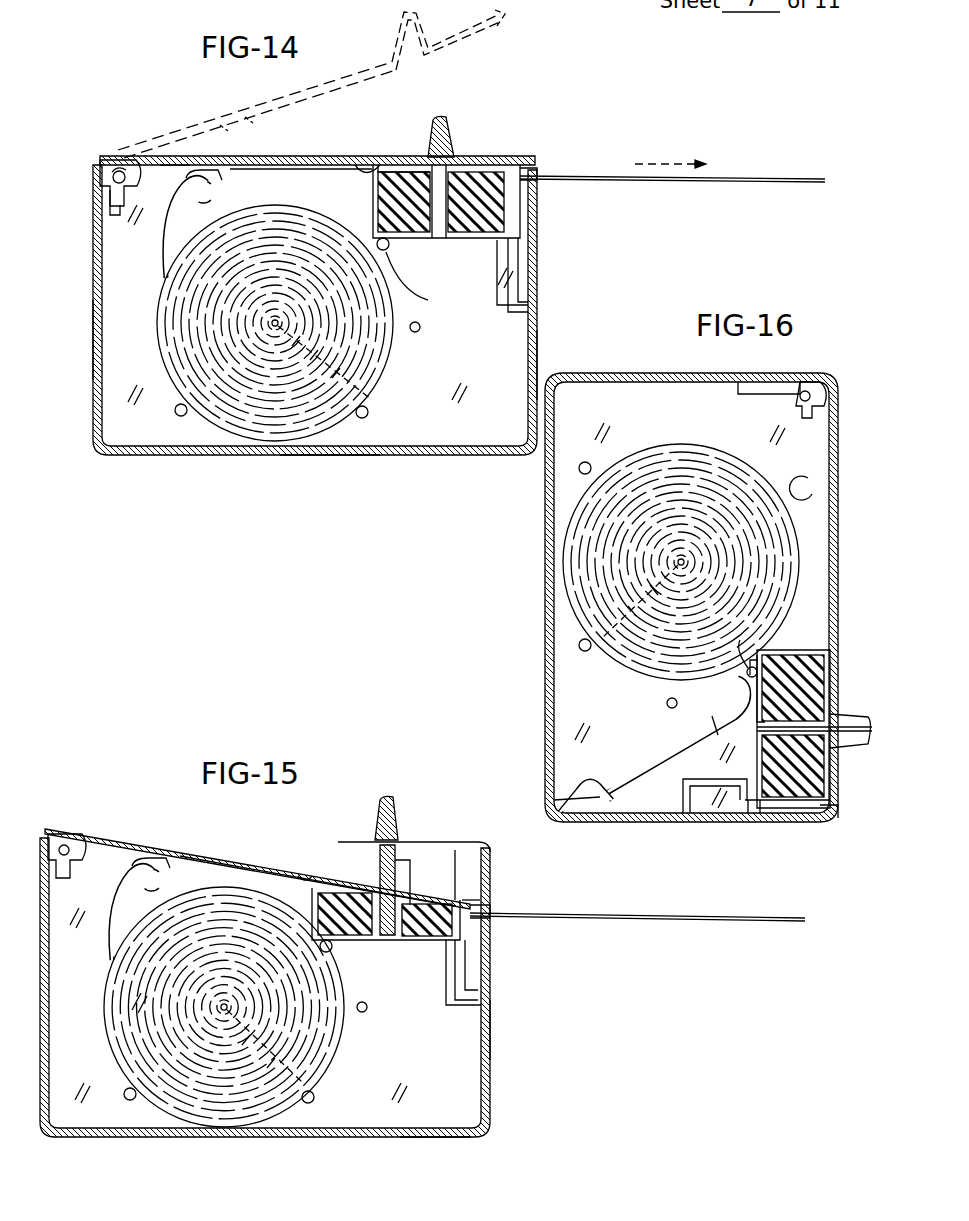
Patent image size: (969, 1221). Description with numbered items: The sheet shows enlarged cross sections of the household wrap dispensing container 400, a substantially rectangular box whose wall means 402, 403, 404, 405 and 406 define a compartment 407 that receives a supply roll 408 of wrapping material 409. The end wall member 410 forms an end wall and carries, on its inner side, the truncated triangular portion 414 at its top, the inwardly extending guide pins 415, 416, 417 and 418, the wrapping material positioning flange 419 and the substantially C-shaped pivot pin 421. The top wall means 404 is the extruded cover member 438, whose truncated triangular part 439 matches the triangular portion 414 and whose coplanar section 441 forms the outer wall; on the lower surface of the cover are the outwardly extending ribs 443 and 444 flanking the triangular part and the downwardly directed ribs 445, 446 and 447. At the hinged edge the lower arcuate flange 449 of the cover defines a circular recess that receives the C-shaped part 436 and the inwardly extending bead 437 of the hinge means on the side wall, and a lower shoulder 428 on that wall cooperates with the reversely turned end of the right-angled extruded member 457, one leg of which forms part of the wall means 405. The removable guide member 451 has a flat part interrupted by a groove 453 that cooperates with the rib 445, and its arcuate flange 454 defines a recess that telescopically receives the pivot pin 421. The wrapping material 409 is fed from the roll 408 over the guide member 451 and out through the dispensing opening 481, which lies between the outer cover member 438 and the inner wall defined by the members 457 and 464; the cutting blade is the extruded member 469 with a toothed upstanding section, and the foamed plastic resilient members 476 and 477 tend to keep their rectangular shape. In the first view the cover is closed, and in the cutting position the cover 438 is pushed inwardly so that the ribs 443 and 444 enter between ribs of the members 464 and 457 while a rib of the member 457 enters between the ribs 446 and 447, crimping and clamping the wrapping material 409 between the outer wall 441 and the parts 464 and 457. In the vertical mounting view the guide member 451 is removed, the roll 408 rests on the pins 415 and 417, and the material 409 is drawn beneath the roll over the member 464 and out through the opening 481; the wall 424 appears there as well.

In FIG. 14, the household wrap dispensing container 400 is at (548, 112).
In FIG. 15, the household wrap dispensing container 400 is at (445, 804).
In FIG. 16, the household wrap dispensing container 400 is at (522, 568).
In FIG. 14, the end wall means 402 is at (108, 378).
In FIG. 15, the end wall means 402 is at (265, 987).
In FIG. 14, the wall means 403 is at (93, 340).
In FIG. 14, the wall means 404 is at (168, 155).
In FIG. 14, the wall means 405 is at (530, 360).
In FIG. 15, the wall means 405 is at (490, 1042).
In FIG. 14, the wall means 406 is at (312, 452).
In FIG. 15, the wall means 406 is at (447, 1140).
In FIG. 14, the compartment 407 is at (404, 419).
In FIG. 15, the compartment 407 is at (450, 1086).
In FIG. 14, the supply roll 408 is at (250, 425).
In FIG. 15, the supply roll 408 is at (246, 1115).
In FIG. 16, the supply roll 408 is at (585, 580).
In FIG. 14, the wrapping material 409 is at (770, 177).
In FIG. 15, the wrapping material 409 is at (695, 922).
In FIG. 16, the wrapping material 409 is at (840, 720).
In FIG. 14, the end wall member 410 is at (150, 430).
In FIG. 15, the end wall member 410 is at (372, 1120).
In FIG. 16, the end wall member 410 is at (560, 683).
In FIG. 15, the truncated triangular portion 414 is at (385, 796).
In FIG. 14, the guide pin 415 is at (421, 285).
In FIG. 16, the guide pin 415 is at (760, 668).
In FIG. 14, the guide pin 416 is at (421, 328).
In FIG. 15, the guide pin 416 is at (362, 1007).
In FIG. 16, the guide pin 416 is at (669, 709).
In FIG. 14, the guide pin 417 is at (370, 410).
In FIG. 15, the guide pin 417 is at (310, 1104).
In FIG. 16, the guide pin 417 is at (583, 652).
In FIG. 14, the guide pin 418 is at (181, 418).
In FIG. 15, the guide pin 418 is at (131, 1102).
In FIG. 16, the guide pin 418 is at (590, 462).
In FIG. 14, the wrapping material positioning flange 419 is at (364, 384).
In FIG. 15, the wrapping material positioning flange 419 is at (312, 1076).
In FIG. 16, the wrapping material positioning flange 419 is at (625, 665).
In FIG. 14, the C-shaped pivot pin 421 is at (205, 176).
In FIG. 15, the C-shaped pivot pin 421 is at (148, 866).
In FIG. 16, the C-shaped pivot pin 421 is at (810, 474).
In FIG. 16, the housing wall 424 is at (546, 500).
In FIG. 14, the lower shoulder 428 is at (522, 312).
In FIG. 15, the lower shoulder 428 is at (476, 1000).
In FIG. 16, the lower shoulder 428 is at (715, 796).
In FIG. 14, the C-shaped part 436 is at (116, 160).
In FIG. 15, the C-shaped part 436 is at (67, 856).
In FIG. 16, the C-shaped part 436 is at (814, 383).
In FIG. 14, the inwardly extending bead 437 is at (112, 179).
In FIG. 14, the extruded member (cover member) 438 is at (318, 85).
In FIG. 15, the extruded member (cover member) 438 is at (240, 862).
In FIG. 14, the truncated triangular part 439 is at (470, 90).
In FIG. 16, the truncated triangular part 439 is at (866, 746).
In FIG. 15, the opposed part (outer wall) 441 is at (306, 872).
In FIG. 15, the outwardly extending rib 443 is at (370, 886).
In FIG. 15, the outwardly extending rib 444 is at (417, 892).
In FIG. 14, the downwardly directed rib 445 is at (370, 165).
In FIG. 15, the downwardly directed rib 446 is at (460, 897).
In FIG. 15, the downwardly directed rib 447 is at (470, 903).
In FIG. 14, the lower arcuate flange 449 is at (110, 213).
In FIG. 16, the lower arcuate flange 449 is at (792, 404).
In FIG. 14, the removable guide member 451 is at (312, 166).
In FIG. 15, the removable guide member 451 is at (298, 872).
In FIG. 16, the removable guide member 451 is at (630, 795).
In FIG. 16, the groove 453 is at (590, 796).
In FIG. 14, the arcuate flange 454 is at (168, 244).
In FIG. 15, the arcuate flange 454 is at (118, 915).
In FIG. 16, the arcuate flange 454 is at (744, 700).
In FIG. 14, the extruded member 457 is at (522, 191).
In FIG. 15, the extruded member 457 is at (470, 955).
In FIG. 16, the extruded member 457 is at (757, 814).
In FIG. 14, the member 464 is at (376, 170).
In FIG. 16, the member 464 is at (825, 652).
In FIG. 14, the extruded member (cutting blade) 469 is at (392, 250).
In FIG. 15, the extruded member (cutting blade) 469 is at (397, 890).
In FIG. 16, the extruded member (cutting blade) 469 is at (748, 662).
In FIG. 14, the resilient member 476 is at (385, 208).
In FIG. 15, the resilient member 476 is at (345, 926).
In FIG. 16, the resilient member 476 is at (793, 729).
In FIG. 14, the resilient member 477 is at (492, 226).
In FIG. 15, the resilient member 477 is at (420, 942).
In FIG. 14, the dispensing opening 481 is at (540, 162).
In FIG. 15, the dispensing opening 481 is at (478, 912).
In FIG. 16, the dispensing opening 481 is at (835, 813).